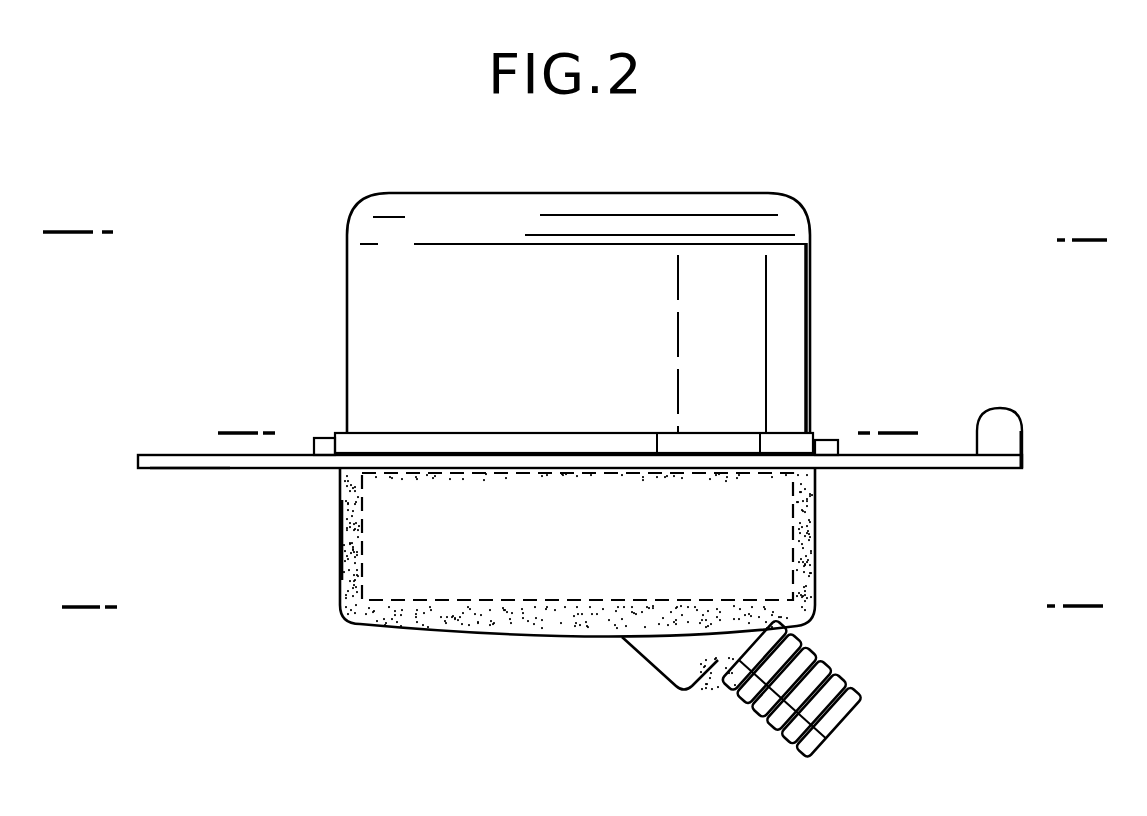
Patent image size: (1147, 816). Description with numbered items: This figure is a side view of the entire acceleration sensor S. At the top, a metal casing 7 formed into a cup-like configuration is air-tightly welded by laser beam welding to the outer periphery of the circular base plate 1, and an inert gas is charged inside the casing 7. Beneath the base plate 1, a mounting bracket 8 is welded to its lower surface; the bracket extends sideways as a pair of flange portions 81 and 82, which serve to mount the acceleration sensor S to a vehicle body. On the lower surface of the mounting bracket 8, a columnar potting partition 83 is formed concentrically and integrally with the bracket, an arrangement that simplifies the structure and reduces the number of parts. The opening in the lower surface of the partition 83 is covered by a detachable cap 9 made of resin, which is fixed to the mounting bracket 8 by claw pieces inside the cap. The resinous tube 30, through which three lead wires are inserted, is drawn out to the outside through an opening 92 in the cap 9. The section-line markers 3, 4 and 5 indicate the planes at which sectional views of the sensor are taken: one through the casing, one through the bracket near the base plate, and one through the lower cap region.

The acceleration sensor S is at (822, 314).
The metal casing 7 is at (597, 208).
The circular base plate 1 is at (325, 446).
The mounting bracket 8 is at (180, 446).
The flange portion 81 is at (192, 470).
The flange portion 82 is at (950, 470).
The potting partition 83 is at (348, 553).
The cap 9 is at (592, 620).
The opening 92 is at (712, 689).
The resinous tube 30 is at (818, 658).
The section line 3 is at (60, 208).
The section line 4 is at (230, 458).
The section line 5 is at (73, 632).